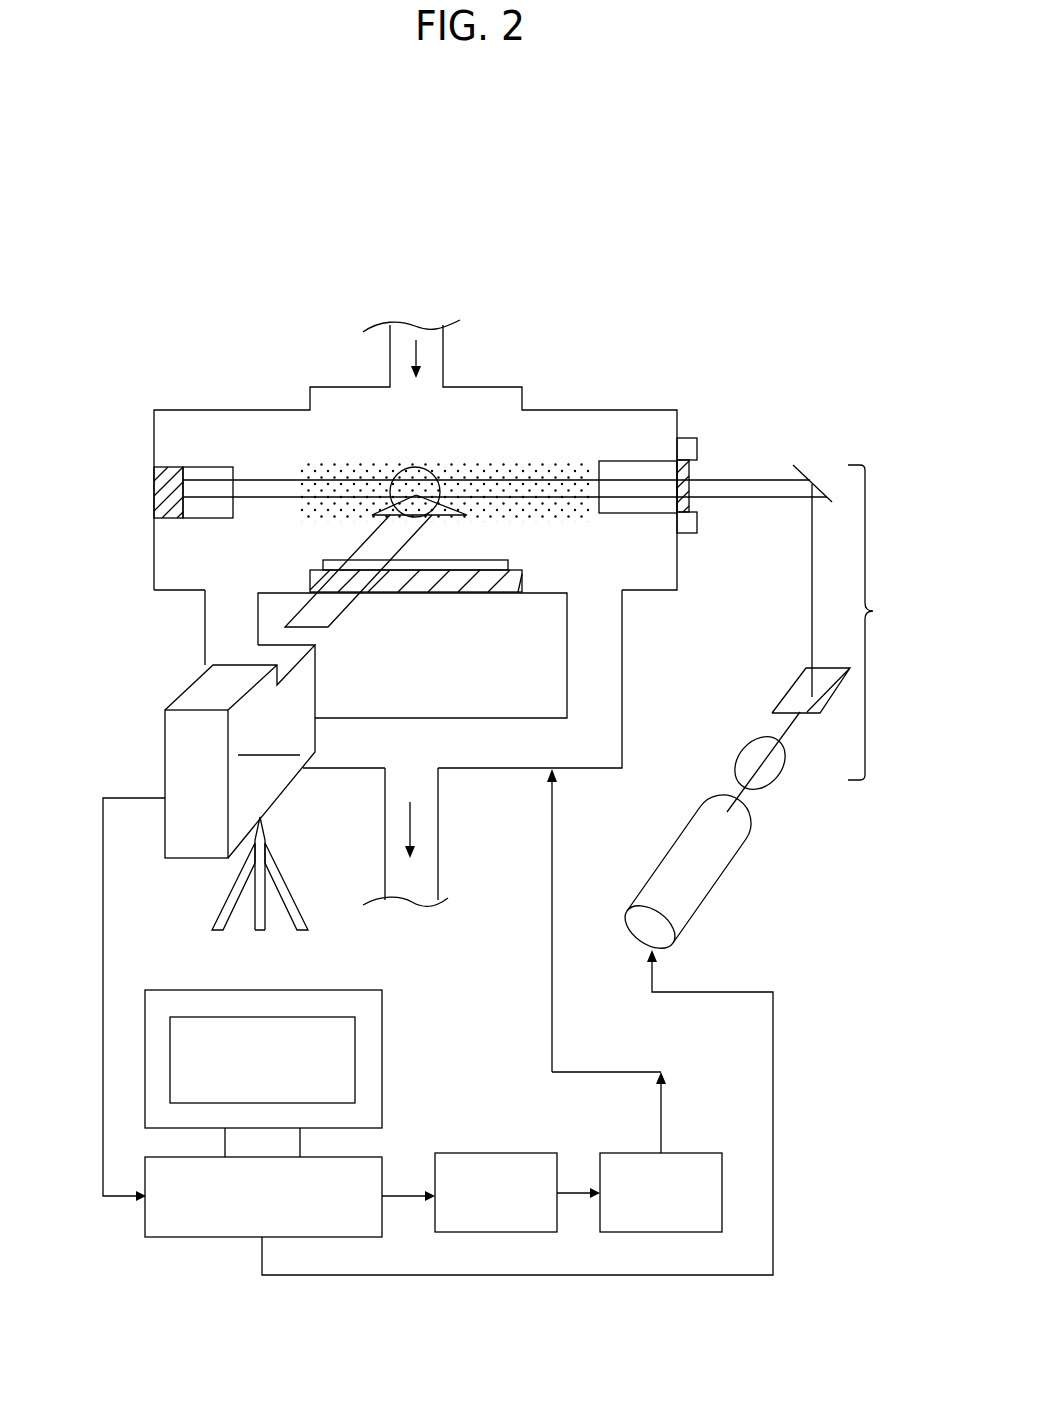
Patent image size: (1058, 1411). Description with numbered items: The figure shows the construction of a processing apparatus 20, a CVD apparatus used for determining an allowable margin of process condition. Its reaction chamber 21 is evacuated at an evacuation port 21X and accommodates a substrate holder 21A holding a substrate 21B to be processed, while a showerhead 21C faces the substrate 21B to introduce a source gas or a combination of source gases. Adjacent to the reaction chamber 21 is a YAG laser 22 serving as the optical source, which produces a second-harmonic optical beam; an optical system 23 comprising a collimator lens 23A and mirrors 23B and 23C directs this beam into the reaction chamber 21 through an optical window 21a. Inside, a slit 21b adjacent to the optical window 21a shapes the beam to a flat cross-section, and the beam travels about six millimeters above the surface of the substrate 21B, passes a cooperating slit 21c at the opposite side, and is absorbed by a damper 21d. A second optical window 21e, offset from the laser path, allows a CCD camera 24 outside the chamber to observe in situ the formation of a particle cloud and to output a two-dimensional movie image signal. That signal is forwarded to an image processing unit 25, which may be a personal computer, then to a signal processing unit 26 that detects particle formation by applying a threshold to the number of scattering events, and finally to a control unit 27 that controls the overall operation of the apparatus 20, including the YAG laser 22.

The processing apparatus 20 is at (457, 210).
The reaction chamber 21 is at (658, 408).
The optical window 21a is at (690, 488).
The slit 21b is at (620, 461).
The cooperating slit 21c is at (215, 467).
The damper 21d is at (164, 467).
The optical window 21e is at (435, 473).
The showerhead 21C is at (510, 387).
The substrate holder 21A is at (518, 587).
The substrate 21B is at (508, 562).
The evacuation port 21X is at (622, 628).
The YAG laser 22 is at (680, 873).
The optical system 23 is at (800, 635).
The collimator lens 23A is at (778, 786).
The mirror 23B is at (790, 695).
The mirror 23C is at (828, 493).
The CCD camera 24 is at (175, 740).
The image processing unit 25 is at (382, 1022).
The signal processing unit 26 is at (545, 1153).
The control unit 27 is at (712, 1153).